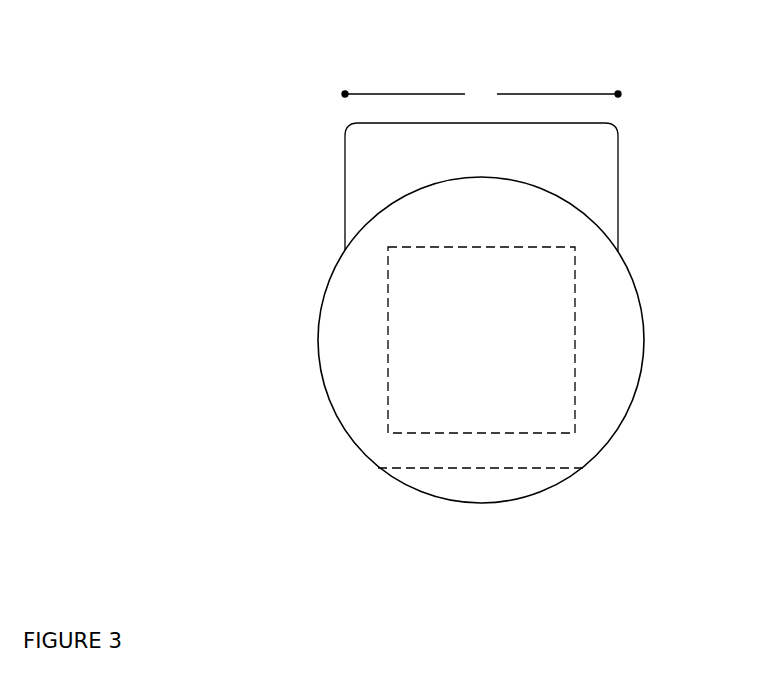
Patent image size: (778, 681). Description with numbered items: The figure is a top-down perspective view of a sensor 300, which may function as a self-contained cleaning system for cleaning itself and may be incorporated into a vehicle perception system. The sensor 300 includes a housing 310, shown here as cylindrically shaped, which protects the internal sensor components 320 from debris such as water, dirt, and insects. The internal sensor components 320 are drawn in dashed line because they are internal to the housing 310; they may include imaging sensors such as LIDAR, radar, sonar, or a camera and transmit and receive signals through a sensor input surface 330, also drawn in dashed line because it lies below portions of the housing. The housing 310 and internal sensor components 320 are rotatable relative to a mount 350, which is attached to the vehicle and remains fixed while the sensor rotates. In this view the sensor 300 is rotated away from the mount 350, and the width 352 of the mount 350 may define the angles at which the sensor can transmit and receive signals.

The sensor 300 is at (158, 92).
The housing 310 is at (647, 338).
The internal sensor components 320 is at (482, 468).
The sensor input surface 330 is at (575, 359).
The mount 350 is at (618, 179).
The width 352 is at (481, 95).